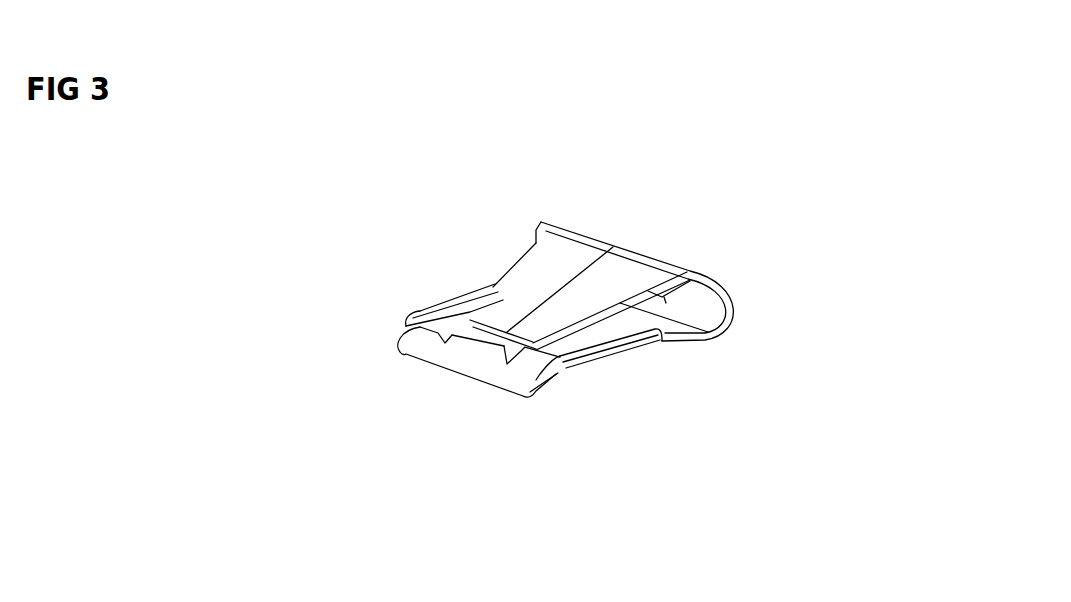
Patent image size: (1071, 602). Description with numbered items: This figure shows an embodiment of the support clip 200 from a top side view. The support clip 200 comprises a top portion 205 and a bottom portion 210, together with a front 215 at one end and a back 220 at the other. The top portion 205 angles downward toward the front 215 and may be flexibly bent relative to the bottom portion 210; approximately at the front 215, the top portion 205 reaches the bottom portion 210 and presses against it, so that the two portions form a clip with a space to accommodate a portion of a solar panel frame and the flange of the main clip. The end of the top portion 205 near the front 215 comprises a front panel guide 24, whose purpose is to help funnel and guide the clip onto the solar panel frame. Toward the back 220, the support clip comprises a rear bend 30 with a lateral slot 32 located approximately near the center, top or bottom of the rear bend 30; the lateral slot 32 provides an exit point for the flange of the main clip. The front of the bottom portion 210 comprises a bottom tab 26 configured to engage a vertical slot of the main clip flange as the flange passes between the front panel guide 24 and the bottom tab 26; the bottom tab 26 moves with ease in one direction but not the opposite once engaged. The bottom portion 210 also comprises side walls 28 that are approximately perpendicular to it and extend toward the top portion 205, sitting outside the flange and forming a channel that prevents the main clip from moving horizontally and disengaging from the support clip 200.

The support clip 200 is at (265, 283).
The front panel guide 24 is at (462, 305).
The top portion 205 is at (531, 288).
The back 220 is at (680, 222).
The lateral slot 32 is at (672, 290).
The rear bend 30 is at (745, 318).
The bottom tab 26 is at (474, 352).
The side walls 28 is at (637, 358).
The front 215 is at (410, 405).
The bottom portion 210 is at (585, 407).